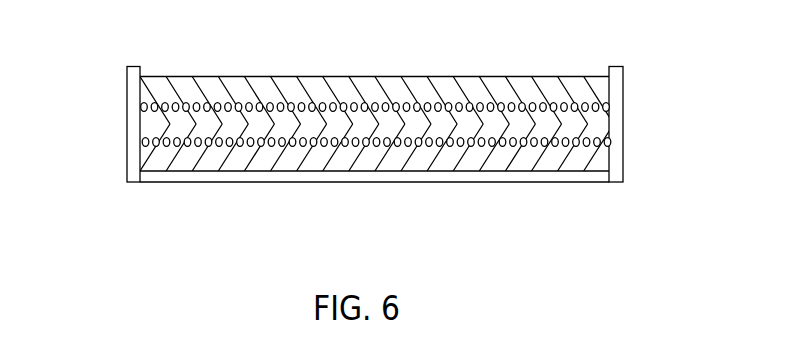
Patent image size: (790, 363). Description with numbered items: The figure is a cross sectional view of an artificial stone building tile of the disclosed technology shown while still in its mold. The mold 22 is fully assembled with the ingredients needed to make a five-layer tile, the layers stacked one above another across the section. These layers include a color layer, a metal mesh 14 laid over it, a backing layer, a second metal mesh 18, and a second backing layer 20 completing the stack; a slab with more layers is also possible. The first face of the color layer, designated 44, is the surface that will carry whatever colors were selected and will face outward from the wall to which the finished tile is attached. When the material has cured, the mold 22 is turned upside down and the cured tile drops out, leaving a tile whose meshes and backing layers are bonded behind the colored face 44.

The metal mesh 14 is at (167, 143).
The second metal mesh 18 is at (163, 107).
The second backing layer 20 is at (210, 90).
The mold 22 is at (618, 89).
The first face of the color layer 44 is at (437, 171).